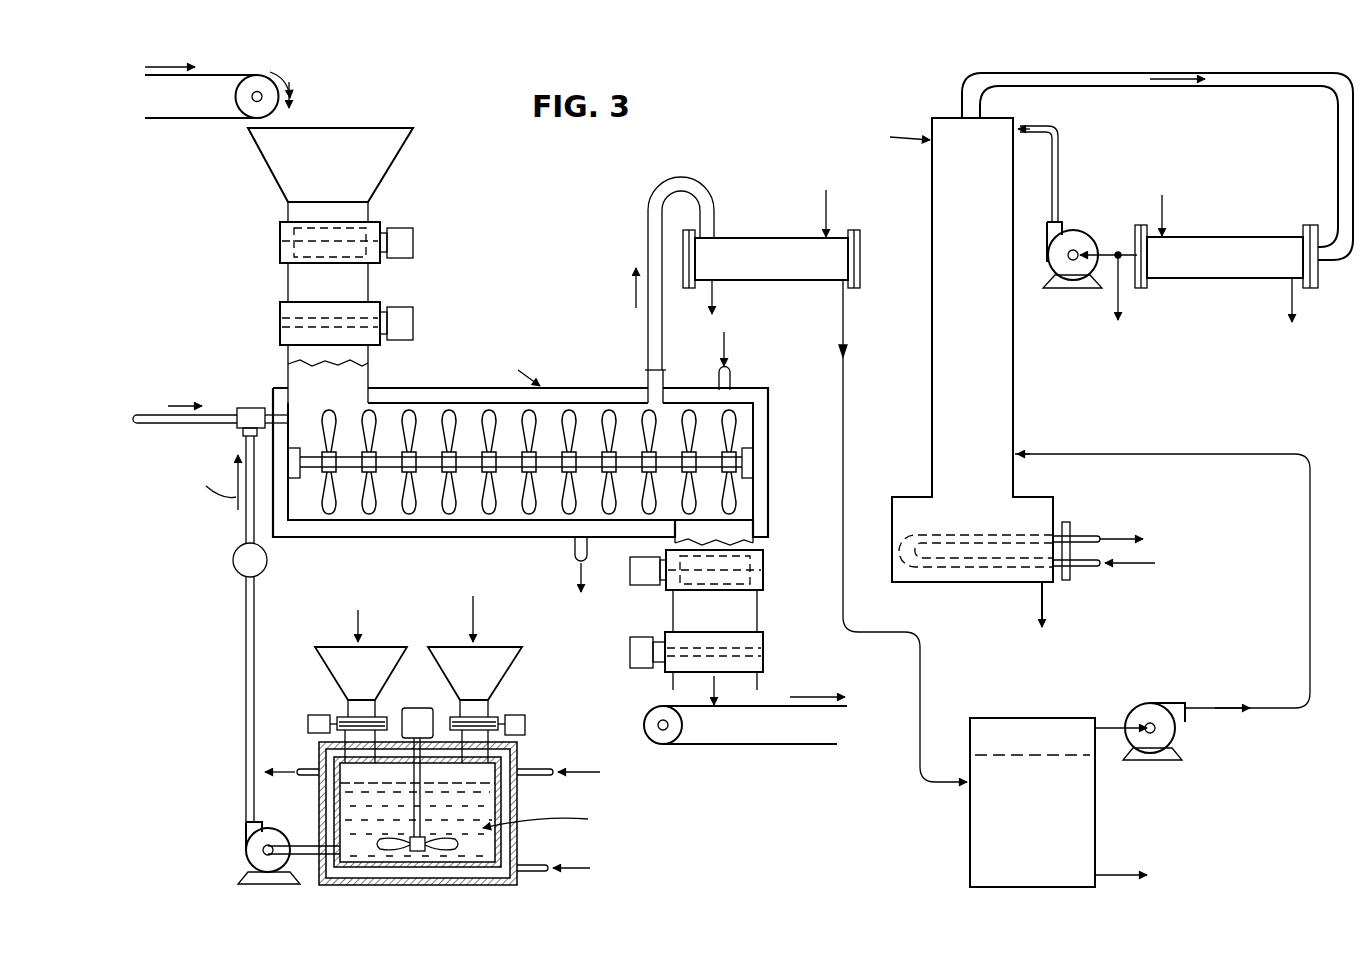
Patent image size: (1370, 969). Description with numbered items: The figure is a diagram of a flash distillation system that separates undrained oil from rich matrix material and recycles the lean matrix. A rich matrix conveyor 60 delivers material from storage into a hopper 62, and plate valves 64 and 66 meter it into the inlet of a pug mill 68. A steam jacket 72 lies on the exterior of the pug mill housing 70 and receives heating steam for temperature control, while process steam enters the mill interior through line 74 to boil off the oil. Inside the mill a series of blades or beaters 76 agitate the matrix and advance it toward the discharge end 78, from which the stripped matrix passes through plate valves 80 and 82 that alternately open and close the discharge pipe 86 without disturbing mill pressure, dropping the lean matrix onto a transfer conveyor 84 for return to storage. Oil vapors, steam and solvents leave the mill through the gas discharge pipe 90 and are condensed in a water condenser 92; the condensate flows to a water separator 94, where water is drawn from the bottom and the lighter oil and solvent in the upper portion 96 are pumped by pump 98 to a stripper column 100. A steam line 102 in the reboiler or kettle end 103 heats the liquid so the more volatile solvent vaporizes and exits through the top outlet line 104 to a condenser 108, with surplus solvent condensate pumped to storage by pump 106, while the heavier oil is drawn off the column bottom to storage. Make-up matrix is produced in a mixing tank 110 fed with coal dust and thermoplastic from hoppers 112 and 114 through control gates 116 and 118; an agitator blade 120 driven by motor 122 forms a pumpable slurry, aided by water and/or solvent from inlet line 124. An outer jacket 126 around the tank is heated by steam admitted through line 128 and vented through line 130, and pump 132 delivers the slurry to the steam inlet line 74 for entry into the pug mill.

The rich matrix conveyor 60 is at (195, 122).
The hopper 62 is at (388, 153).
The plate valve 64 is at (407, 240).
The plate valve 66 is at (407, 326).
The pug mill 68 is at (777, 414).
The pug mill housing 70 is at (392, 401).
The steam jacket 72 is at (646, 392).
The process steam line 74 is at (213, 415).
The blades or stirring and mixing beaters 76 is at (333, 506).
The outlet or discharge end 78 is at (735, 532).
The plate valve 80 is at (757, 561).
The plate valve 82 is at (755, 645).
The transfer conveyor 84 is at (815, 708).
The discharge pipe 86 is at (745, 612).
The gas discharge pipe 90 is at (663, 192).
The water condenser 92 is at (788, 237).
The water separator 94 is at (1082, 803).
The upper portion of the separator 96 is at (998, 740).
The pump 98 is at (1152, 706).
The stripper column 100 is at (1005, 410).
The steam line 102 is at (1075, 568).
The reboiler or kettle end 103 is at (1037, 507).
The top outlet line 104 is at (1340, 150).
The pump 106 is at (1080, 240).
The condenser 108 is at (1233, 236).
The mixing tank 110 is at (500, 801).
The hopper 112 is at (340, 656).
The hopper 114 is at (456, 656).
The control gate 116 is at (355, 717).
The control gate 118 is at (488, 720).
The agitator blade 120 is at (396, 838).
The motor 122 is at (420, 708).
The water and/or solvent inlet line 124 is at (530, 769).
The outer jacket 126 is at (518, 850).
The steam line 128 is at (537, 872).
The discharge line 130 is at (312, 766).
The pump 132 is at (268, 830).